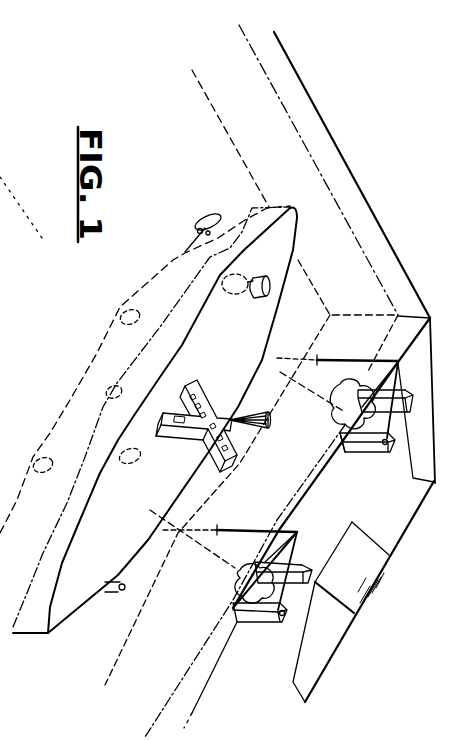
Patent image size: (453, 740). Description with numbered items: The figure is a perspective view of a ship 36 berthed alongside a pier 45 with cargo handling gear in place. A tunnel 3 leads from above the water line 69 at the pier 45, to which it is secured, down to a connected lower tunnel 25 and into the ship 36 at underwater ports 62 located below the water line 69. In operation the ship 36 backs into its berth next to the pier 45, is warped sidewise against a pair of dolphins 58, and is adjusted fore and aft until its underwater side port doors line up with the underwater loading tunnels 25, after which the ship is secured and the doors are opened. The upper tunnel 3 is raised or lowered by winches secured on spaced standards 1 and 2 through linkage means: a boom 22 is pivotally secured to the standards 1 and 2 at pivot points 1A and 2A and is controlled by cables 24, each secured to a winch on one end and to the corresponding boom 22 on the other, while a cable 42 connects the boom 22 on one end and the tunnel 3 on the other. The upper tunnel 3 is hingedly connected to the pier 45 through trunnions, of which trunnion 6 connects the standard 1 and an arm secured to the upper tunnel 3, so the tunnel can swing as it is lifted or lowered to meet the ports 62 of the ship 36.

The standard 1 is at (387, 447).
The pivot point on standard 1A is at (353, 455).
The standard 2 is at (413, 405).
The pivot point on standard 2A is at (256, 565).
The upper tunnel 3 is at (310, 382).
The trunnion 6 is at (363, 444).
The boom 22 is at (360, 389).
The cable 24 is at (402, 384).
The lower tunnel 25 is at (282, 353).
The ship 36 is at (84, 568).
The cable 42 is at (352, 358).
The pier 45 is at (238, 684).
The dolphin 58 is at (250, 381).
The underwater port 62 is at (42, 472).
The water line 69 is at (160, 713).